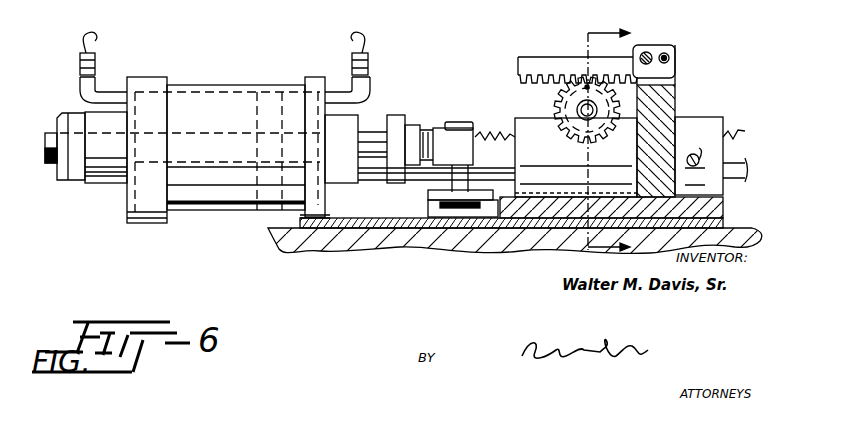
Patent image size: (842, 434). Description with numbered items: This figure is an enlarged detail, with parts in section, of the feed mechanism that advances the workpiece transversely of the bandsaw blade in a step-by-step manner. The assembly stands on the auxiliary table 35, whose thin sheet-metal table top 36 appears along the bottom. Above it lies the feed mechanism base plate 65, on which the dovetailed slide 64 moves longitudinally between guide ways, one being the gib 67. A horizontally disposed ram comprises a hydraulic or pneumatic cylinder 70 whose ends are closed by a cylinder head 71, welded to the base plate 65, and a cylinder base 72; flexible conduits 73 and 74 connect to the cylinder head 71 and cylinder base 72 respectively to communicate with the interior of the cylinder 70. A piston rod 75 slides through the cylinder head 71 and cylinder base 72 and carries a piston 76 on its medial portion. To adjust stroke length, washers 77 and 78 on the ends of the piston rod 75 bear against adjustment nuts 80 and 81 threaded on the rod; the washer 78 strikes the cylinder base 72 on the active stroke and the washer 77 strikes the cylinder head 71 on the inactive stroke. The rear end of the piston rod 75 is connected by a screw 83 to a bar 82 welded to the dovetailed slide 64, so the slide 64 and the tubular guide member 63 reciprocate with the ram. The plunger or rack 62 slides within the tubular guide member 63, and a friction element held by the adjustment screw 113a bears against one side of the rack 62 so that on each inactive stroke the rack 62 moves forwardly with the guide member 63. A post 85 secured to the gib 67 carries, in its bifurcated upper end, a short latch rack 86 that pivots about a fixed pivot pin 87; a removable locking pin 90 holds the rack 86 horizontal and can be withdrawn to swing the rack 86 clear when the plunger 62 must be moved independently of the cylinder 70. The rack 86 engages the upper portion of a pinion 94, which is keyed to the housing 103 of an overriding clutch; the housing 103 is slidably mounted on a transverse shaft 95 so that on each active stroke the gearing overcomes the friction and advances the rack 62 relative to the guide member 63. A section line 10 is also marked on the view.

The section line 10 is at (588, 135).
The auxiliary table 35 is at (336, 244).
The table top 36 is at (405, 240).
The rack 62 is at (487, 135).
The tubular guide member 63 is at (515, 153).
The dovetailed slide 64 is at (520, 195).
The feed mechanism base plate 65 is at (375, 220).
The guide way 67 is at (723, 208).
The cylinder 70 is at (226, 85).
The cylinder head 71 is at (312, 77).
The cylinder base 72 is at (145, 77).
The flexible conduit 73 is at (366, 36).
The flexible conduit 74 is at (93, 40).
The piston rod 75 is at (372, 130).
The piston 76 is at (257, 117).
The washer 77 is at (398, 115).
The washer 78 is at (80, 183).
The adjustment nut 80 is at (414, 126).
The adjustment nut 81 is at (56, 116).
The bar 82 is at (428, 197).
The screw 83 is at (455, 126).
The post 85 is at (676, 96).
The rack 86 is at (527, 57).
The pivot pin 87 is at (676, 56).
The locking pin 90 is at (644, 51).
The pinion 94 is at (560, 103).
The transverse shaft 95 is at (568, 130).
The housing 103 is at (597, 138).
The adjustment screw 113a is at (699, 156).